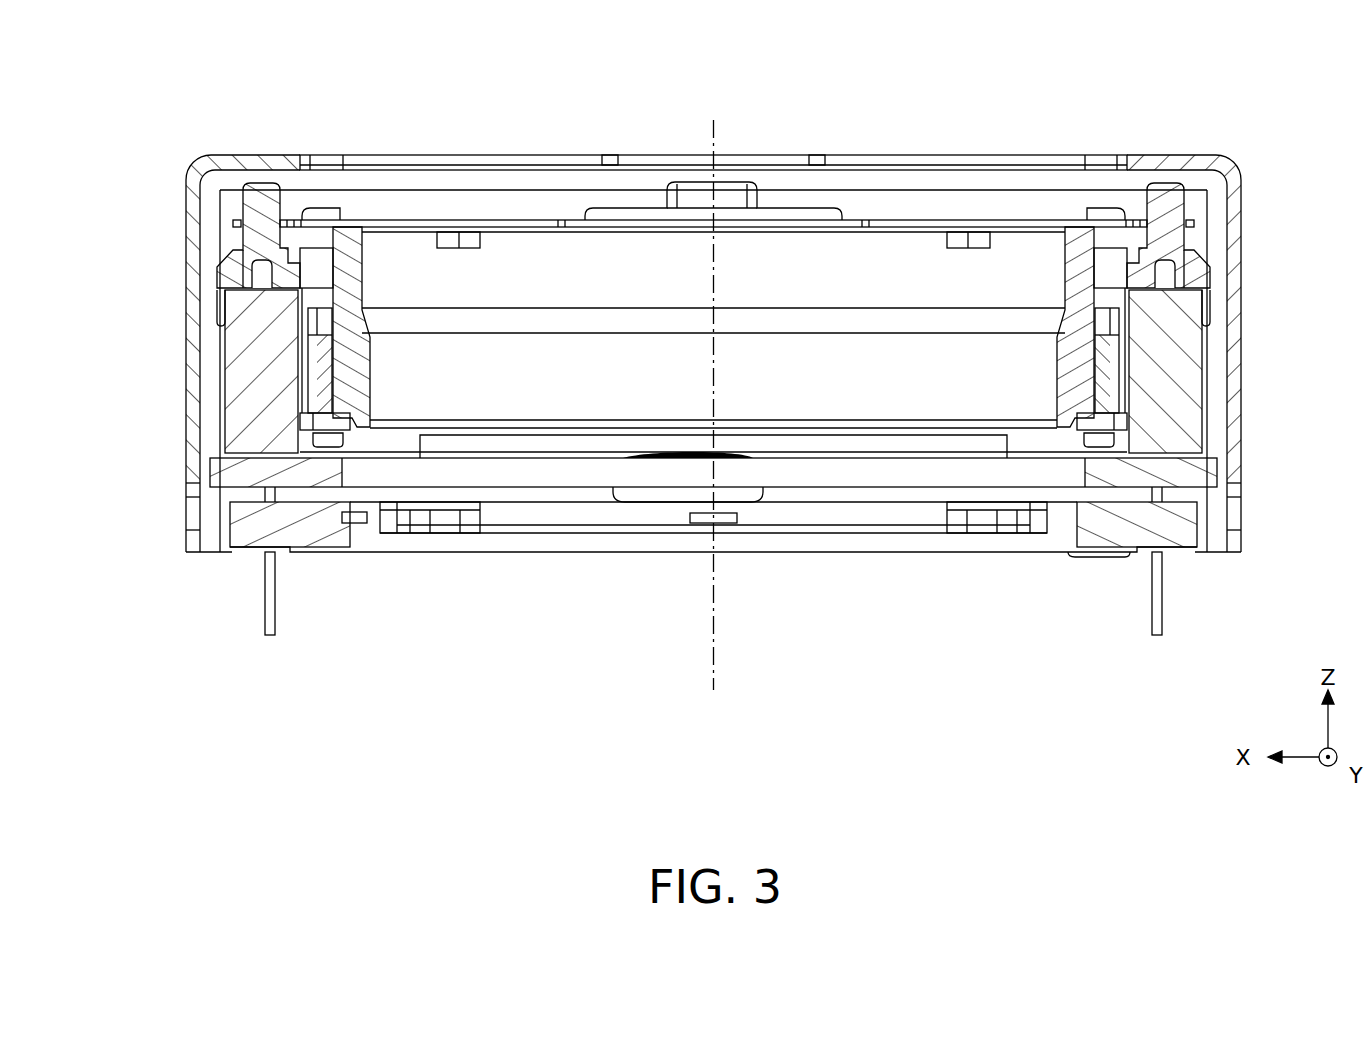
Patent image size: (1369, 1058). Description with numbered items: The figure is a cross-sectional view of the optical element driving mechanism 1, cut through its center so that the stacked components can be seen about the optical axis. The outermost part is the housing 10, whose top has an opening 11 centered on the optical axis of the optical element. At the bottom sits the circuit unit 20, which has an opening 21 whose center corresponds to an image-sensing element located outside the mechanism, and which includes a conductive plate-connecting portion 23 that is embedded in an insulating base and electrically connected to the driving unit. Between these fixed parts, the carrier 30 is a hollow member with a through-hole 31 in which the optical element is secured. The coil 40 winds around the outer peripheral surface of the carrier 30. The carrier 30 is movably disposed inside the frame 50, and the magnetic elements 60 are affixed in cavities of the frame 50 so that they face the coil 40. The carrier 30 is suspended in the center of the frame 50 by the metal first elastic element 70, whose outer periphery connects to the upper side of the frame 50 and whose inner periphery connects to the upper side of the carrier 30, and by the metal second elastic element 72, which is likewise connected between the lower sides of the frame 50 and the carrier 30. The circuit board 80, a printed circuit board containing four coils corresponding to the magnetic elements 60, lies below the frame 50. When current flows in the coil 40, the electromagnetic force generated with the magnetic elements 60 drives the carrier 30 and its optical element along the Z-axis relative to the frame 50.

The optical element driving mechanism 1 is at (106, 66).
The housing 10 is at (750, 320).
The opening 11 is at (822, 160).
The circuit unit 20 is at (235, 520).
The opening 21 is at (880, 515).
The plate-connecting portion 23 is at (352, 527).
The carrier 30 is at (350, 220).
The through-hole 31 is at (905, 270).
The coil 40 is at (320, 372).
The frame 50 is at (258, 205).
The magnetic element 60 is at (245, 425).
The first elastic element 70 is at (510, 226).
The second elastic element 72 is at (548, 437).
The circuit board 80 is at (230, 470).